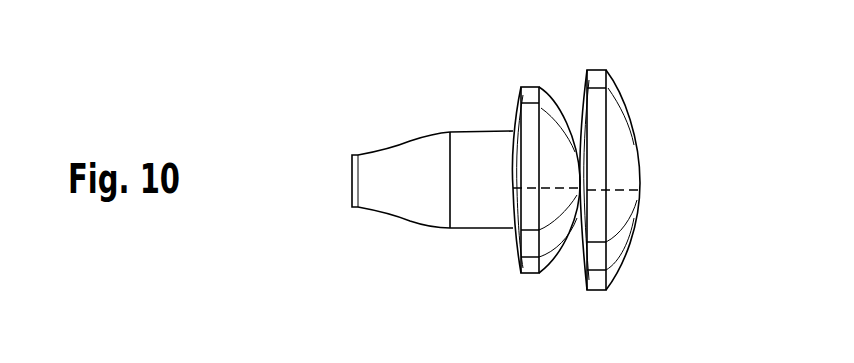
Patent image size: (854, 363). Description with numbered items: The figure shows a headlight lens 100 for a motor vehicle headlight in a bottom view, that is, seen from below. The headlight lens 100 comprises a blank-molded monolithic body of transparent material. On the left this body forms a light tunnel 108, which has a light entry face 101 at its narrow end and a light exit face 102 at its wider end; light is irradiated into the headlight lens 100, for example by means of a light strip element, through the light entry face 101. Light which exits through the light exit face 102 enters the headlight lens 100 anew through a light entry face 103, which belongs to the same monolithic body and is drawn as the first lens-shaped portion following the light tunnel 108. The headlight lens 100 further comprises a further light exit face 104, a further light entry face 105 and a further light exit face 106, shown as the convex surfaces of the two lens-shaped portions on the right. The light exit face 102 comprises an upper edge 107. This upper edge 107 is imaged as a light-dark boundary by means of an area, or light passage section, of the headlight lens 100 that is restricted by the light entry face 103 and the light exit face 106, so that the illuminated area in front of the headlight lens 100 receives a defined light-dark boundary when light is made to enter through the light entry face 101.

The headlight lens 100 is at (430, 119).
The light entry face 101 is at (352, 179).
The light exit face 102 is at (452, 167).
The light entry face 103 is at (515, 117).
The further light exit face 104 is at (557, 110).
The further light entry face 105 is at (582, 257).
The further light exit face 106 is at (618, 267).
The upper edge 107 is at (453, 207).
The light tunnel 108 is at (400, 170).